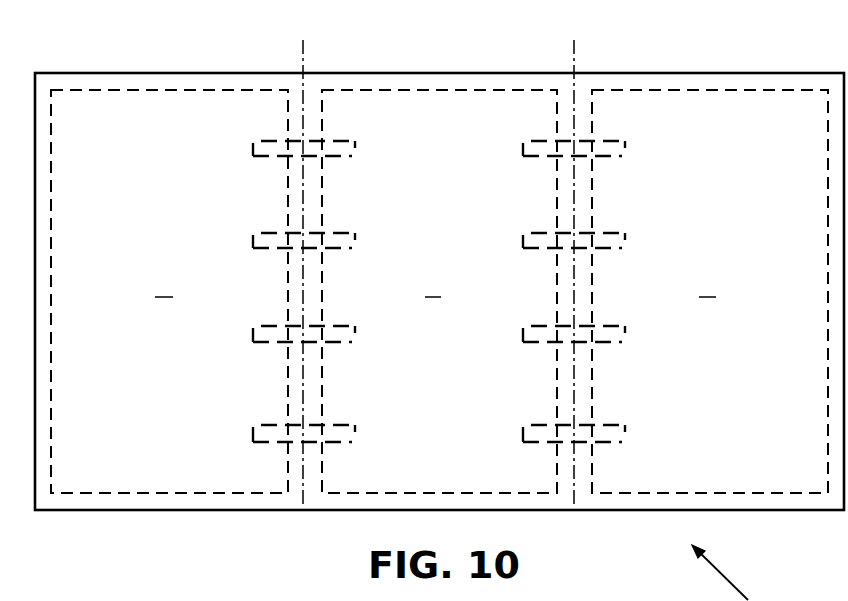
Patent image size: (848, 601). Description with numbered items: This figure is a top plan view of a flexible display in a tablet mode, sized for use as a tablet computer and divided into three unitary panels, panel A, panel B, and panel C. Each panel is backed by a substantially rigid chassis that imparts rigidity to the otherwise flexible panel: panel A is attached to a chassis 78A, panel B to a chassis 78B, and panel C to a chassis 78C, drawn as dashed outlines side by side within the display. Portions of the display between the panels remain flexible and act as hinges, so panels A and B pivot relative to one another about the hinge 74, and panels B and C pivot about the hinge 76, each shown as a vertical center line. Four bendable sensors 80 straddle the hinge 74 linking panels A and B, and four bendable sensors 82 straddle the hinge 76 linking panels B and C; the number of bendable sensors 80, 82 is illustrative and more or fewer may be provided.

The hinge 74 is at (302, 52).
The hinge 76 is at (572, 52).
The chassis 78A is at (170, 90).
The chassis 78B is at (315, 142).
The chassis 78C is at (760, 90).
The bendable sensors 80 is at (253, 243).
The bendable sensors 82 is at (625, 238).